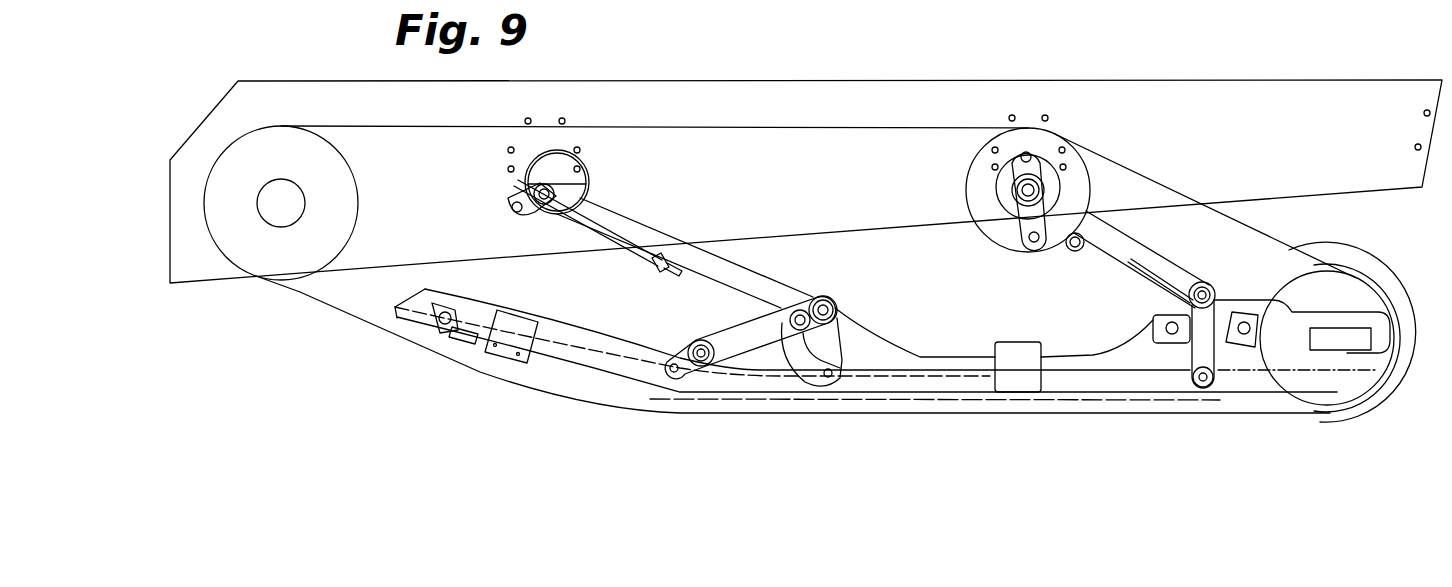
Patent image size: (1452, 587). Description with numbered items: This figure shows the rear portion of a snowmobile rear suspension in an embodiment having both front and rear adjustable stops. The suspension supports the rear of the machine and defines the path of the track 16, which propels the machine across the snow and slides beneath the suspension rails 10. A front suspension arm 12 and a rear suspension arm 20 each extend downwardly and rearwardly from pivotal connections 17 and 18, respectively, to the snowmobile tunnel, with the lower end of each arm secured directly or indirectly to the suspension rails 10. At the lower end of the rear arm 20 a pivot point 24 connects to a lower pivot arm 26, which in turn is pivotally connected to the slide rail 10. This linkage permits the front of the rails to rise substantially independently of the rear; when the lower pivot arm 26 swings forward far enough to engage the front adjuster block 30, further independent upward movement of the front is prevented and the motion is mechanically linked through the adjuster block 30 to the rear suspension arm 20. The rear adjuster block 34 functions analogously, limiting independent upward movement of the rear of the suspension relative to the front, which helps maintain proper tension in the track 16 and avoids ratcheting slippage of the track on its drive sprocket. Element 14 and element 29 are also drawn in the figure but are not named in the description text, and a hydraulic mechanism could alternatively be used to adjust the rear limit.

The suspension rails 10 is at (643, 378).
The front suspension arm 12 is at (627, 230).
The pivot lever 14 is at (838, 323).
The track 16 is at (372, 325).
The pivotal connection 17 is at (553, 183).
The pivotal connection 18 is at (1028, 185).
The rear suspension arm 20 is at (1105, 237).
The pivot point 24 is at (1336, 238).
The lower pivot arm 26 is at (1185, 358).
The link 29 is at (1203, 387).
The front adjuster block 30 is at (1165, 343).
The rear adjuster block 34 is at (1243, 347).